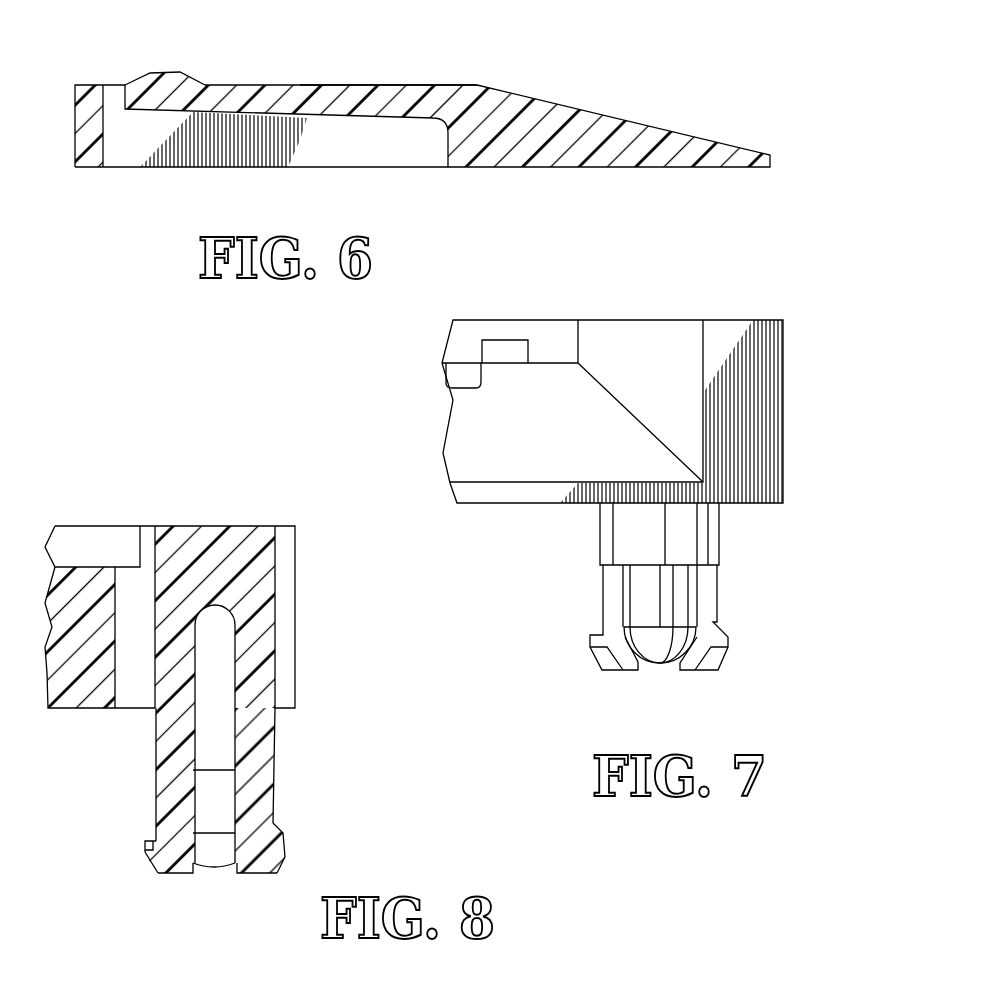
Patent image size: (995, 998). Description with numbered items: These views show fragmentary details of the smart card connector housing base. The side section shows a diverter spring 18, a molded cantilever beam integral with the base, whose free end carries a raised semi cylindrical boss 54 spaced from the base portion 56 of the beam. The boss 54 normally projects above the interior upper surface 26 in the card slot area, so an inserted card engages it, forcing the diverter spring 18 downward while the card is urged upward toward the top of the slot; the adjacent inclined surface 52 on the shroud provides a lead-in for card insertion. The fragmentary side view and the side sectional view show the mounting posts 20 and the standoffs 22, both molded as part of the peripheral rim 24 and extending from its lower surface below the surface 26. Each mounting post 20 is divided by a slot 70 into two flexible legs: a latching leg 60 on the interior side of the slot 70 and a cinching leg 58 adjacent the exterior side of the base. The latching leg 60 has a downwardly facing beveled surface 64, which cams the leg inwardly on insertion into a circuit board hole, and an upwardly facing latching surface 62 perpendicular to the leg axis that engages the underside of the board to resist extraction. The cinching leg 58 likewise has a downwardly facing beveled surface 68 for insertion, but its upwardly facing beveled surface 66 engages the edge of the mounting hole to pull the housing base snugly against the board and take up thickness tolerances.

In FIG. 6, the diverter spring 18 is at (278, 90).
In FIG. 7, the diverter spring 18 is at (508, 347).
In FIG. 7, the mounting post 20 is at (608, 607).
In FIG. 8, the mounting post 20 is at (263, 755).
In FIG. 7, the standoff 22 is at (698, 533).
In FIG. 8, the standoff 22 is at (203, 738).
In FIG. 7, the peripheral rim 24 is at (740, 320).
In FIG. 8, the peripheral rim 24 is at (257, 525).
In FIG. 6, the interior upper surface 26 is at (113, 85).
In FIG. 7, the interior upper surface 26 is at (462, 363).
In FIG. 8, the interior upper surface 26 is at (88, 565).
In FIG. 6, the inclined surface 52 is at (607, 115).
In FIG. 7, the inclined surface 52 is at (483, 437).
In FIG. 6, the raised semi cylindrical boss 54 is at (168, 72).
In FIG. 6, the base portion 56 is at (373, 85).
In FIG. 8, the cinching leg 58 is at (247, 795).
In FIG. 8, the latching leg 60 is at (172, 795).
In FIG. 8, the latching surface 62 is at (155, 835).
In FIG. 8, the beveled surface 64 is at (155, 865).
In FIG. 8, the upwardly facing beveled surface 66 is at (282, 830).
In FIG. 8, the downwardly facing beveled surface 68 is at (287, 855).
In FIG. 8, the slot 70 is at (217, 843).